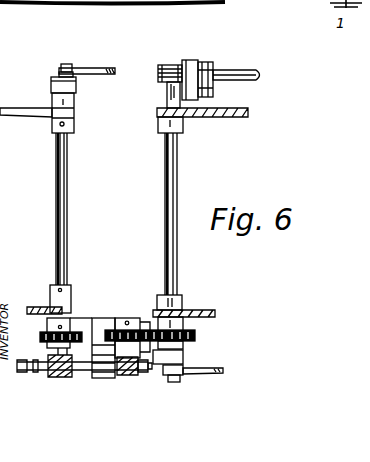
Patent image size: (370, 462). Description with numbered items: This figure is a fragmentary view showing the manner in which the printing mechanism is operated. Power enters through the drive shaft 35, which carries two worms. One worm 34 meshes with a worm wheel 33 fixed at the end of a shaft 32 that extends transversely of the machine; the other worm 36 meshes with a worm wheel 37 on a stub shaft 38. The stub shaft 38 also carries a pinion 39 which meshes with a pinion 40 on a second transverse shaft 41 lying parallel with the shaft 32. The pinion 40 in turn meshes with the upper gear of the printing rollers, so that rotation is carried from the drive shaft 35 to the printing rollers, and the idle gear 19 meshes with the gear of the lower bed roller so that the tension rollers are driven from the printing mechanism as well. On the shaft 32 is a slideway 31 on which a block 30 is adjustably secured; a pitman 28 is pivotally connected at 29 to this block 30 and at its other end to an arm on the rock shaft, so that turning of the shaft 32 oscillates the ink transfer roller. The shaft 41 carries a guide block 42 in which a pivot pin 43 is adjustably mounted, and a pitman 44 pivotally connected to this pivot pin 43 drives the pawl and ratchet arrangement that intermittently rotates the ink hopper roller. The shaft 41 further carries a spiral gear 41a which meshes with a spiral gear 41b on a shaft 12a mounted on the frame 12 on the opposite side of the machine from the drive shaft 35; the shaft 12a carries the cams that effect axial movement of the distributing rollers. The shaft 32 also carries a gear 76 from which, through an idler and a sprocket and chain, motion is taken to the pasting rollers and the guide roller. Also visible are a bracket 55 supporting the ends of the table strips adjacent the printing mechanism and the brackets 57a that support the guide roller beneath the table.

The idle gear 19 is at (128, 0).
The pivotal connection 29 is at (67, 63).
The block 30 is at (58, 72).
The pitman 28 is at (95, 75).
The slideway 31 is at (50, 87).
The shaft 32 is at (68, 203).
The spiral gear 41a is at (168, 66).
The spiral gear 41b is at (175, 63).
The shaft 12a is at (253, 80).
The shaft 41 is at (173, 282).
The frame 12 is at (215, 313).
The pinion 40 is at (195, 334).
The guide block 42 is at (183, 355).
The pivot pin 43 is at (181, 381).
The pitman 44 is at (223, 372).
The drive shaft 35 is at (21, 358).
The brackets 57a is at (40, 307).
The worm 34 is at (55, 376).
The worm wheel 33 is at (85, 373).
The worm 36 is at (123, 377).
The worm wheel 37 is at (147, 369).
The gear 76 is at (77, 318).
The bracket 55 is at (100, 318).
The stub shaft 38 is at (128, 318).
The pinion 39 is at (145, 330).